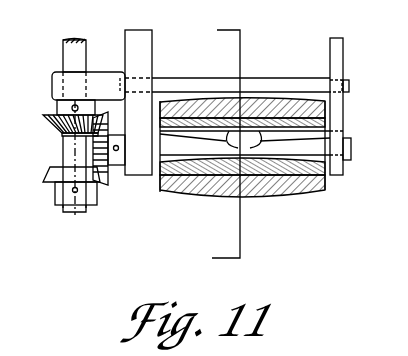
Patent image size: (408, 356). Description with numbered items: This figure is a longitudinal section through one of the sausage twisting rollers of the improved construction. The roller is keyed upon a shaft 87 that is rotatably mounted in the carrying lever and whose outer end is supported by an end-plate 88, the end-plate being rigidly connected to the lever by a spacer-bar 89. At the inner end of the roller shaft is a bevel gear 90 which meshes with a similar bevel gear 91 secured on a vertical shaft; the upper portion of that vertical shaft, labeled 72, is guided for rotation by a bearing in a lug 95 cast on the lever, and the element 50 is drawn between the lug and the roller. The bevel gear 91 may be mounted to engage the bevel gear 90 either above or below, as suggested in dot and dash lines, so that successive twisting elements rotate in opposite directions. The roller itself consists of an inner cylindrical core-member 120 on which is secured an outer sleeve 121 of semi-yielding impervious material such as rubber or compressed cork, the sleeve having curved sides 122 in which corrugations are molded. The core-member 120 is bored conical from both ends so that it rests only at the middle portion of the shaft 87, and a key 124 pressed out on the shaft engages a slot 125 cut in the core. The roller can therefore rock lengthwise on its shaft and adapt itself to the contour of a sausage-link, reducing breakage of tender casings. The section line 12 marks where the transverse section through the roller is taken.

The section line 12- 12 is at (230, 143).
The drive shaft 72 is at (65, 38).
The lug 95 is at (92, 72).
The bevel gear 91 is at (55, 123).
The bevel gear 90 is at (112, 175).
The side plate 50 is at (140, 58).
The spacer-bar 89 is at (272, 78).
The end-plate 88 is at (340, 56).
The shaft 87 is at (351, 152).
The key 124 is at (278, 193).
The slot 125 is at (320, 101).
The core-member 120 is at (322, 195).
The curved sides 122 is at (220, 198).
The outer sleeve 121 is at (182, 198).